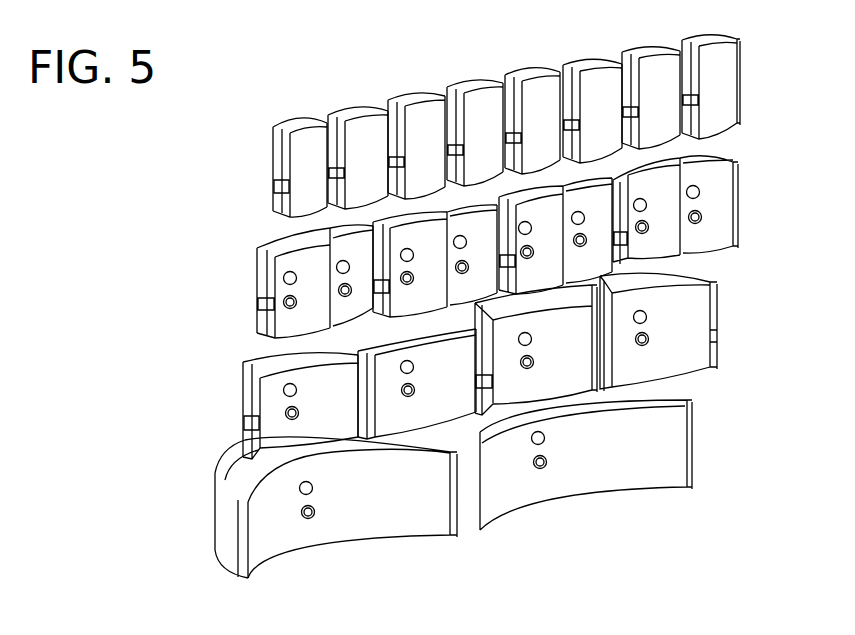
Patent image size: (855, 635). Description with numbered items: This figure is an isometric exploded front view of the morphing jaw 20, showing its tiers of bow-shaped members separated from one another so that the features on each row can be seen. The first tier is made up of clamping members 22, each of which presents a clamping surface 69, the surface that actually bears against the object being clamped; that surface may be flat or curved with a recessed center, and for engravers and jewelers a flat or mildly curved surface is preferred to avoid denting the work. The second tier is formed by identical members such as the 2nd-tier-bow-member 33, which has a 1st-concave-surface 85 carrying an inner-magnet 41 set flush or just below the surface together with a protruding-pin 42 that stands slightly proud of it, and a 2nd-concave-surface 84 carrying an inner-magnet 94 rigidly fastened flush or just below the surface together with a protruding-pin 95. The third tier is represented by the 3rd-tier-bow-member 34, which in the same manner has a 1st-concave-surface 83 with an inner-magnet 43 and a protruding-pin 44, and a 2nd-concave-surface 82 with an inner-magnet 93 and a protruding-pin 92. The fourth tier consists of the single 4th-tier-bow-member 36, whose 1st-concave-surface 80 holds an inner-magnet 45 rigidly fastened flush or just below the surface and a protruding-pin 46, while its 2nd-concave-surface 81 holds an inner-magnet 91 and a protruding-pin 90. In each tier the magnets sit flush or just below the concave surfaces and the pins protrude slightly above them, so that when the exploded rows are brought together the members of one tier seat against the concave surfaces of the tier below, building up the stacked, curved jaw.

The morphing jaw 20 is at (252, 46).
The clamping member 22 is at (296, 128).
The clamping surface 69 is at (307, 162).
The 2nd-tier-bow-member 33 is at (300, 246).
The inner-magnet 94 is at (343, 267).
The protruding-pin 95 is at (345, 290).
The inner-magnet 41 is at (288, 279).
The protruding-pin 42 is at (289, 302).
The 1st-concave-surface 85 is at (298, 261).
The 2nd-concave-surface 84 is at (347, 308).
The 3rd-tier-bow-member 34 is at (270, 354).
The inner-magnet 43 is at (289, 390).
The protruding-pin 44 is at (289, 413).
The 1st-concave-surface 83 is at (282, 428).
The 2nd-concave-surface 82 is at (395, 406).
The protruding-pin 92 is at (408, 370).
The inner-magnet 93 is at (408, 392).
The 4th-tier-bow-member 36 is at (245, 470).
The 1st-concave-surface 80 is at (393, 500).
The inner-magnet 45 is at (310, 492).
The protruding-pin 46 is at (308, 516).
The 2nd-concave-surface 81 is at (637, 447).
The inner-magnet 91 is at (540, 440).
The protruding-pin 90 is at (541, 465).